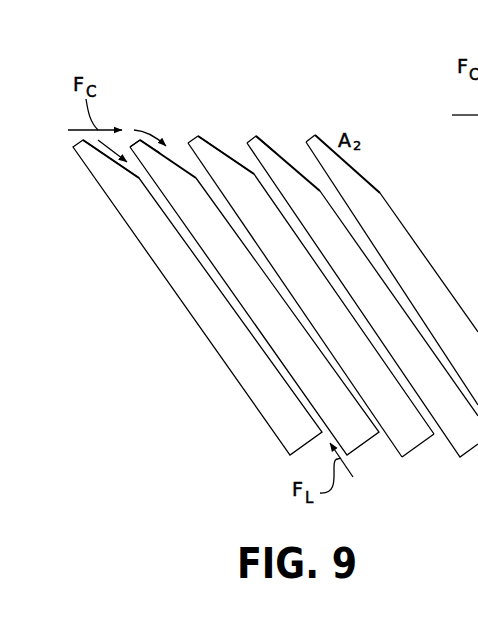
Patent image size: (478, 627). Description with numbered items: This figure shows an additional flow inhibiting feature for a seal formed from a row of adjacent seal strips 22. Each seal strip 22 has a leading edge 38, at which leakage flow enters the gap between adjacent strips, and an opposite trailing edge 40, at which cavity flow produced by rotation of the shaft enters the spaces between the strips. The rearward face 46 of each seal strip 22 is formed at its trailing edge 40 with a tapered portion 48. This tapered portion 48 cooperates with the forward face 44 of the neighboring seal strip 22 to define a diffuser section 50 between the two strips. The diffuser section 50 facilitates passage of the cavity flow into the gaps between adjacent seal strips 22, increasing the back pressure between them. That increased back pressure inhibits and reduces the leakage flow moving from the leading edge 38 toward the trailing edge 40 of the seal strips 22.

The seal strip 22 is at (260, 412).
The leading edge 38 is at (418, 448).
The trailing edge 40 is at (188, 142).
The forward face 44 is at (200, 164).
The rearward face 46 is at (231, 202).
The tapered portion 48 is at (174, 160).
The diffuser section 50 is at (175, 160).